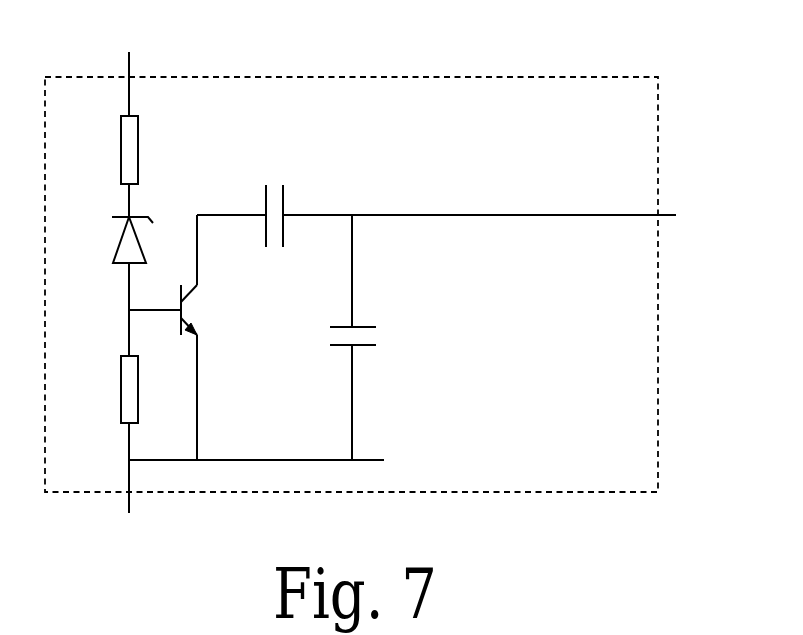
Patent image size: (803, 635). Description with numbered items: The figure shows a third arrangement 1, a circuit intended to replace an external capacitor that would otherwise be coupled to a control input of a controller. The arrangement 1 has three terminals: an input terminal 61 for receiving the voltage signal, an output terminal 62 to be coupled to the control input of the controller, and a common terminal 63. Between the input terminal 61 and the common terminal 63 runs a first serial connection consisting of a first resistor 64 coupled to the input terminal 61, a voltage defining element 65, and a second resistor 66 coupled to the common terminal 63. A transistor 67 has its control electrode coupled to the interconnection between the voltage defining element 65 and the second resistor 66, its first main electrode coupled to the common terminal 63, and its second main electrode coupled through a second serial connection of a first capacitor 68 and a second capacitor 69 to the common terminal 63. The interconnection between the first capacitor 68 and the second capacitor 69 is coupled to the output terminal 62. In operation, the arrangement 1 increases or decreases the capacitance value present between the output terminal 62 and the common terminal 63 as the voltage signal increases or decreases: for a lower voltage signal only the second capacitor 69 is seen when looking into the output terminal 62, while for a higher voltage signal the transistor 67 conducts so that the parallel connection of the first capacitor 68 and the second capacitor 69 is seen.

The arrangement 1 is at (636, 492).
The input terminal 61 is at (128, 67).
The output terminal 62 is at (533, 215).
The common terminal 63 is at (250, 504).
The first resistor 64 is at (105, 166).
The voltage defining element 65 is at (110, 286).
The second resistor 66 is at (105, 408).
The transistor 67 is at (177, 337).
The first capacitor 68 is at (274, 198).
The second capacitor 69 is at (375, 337).